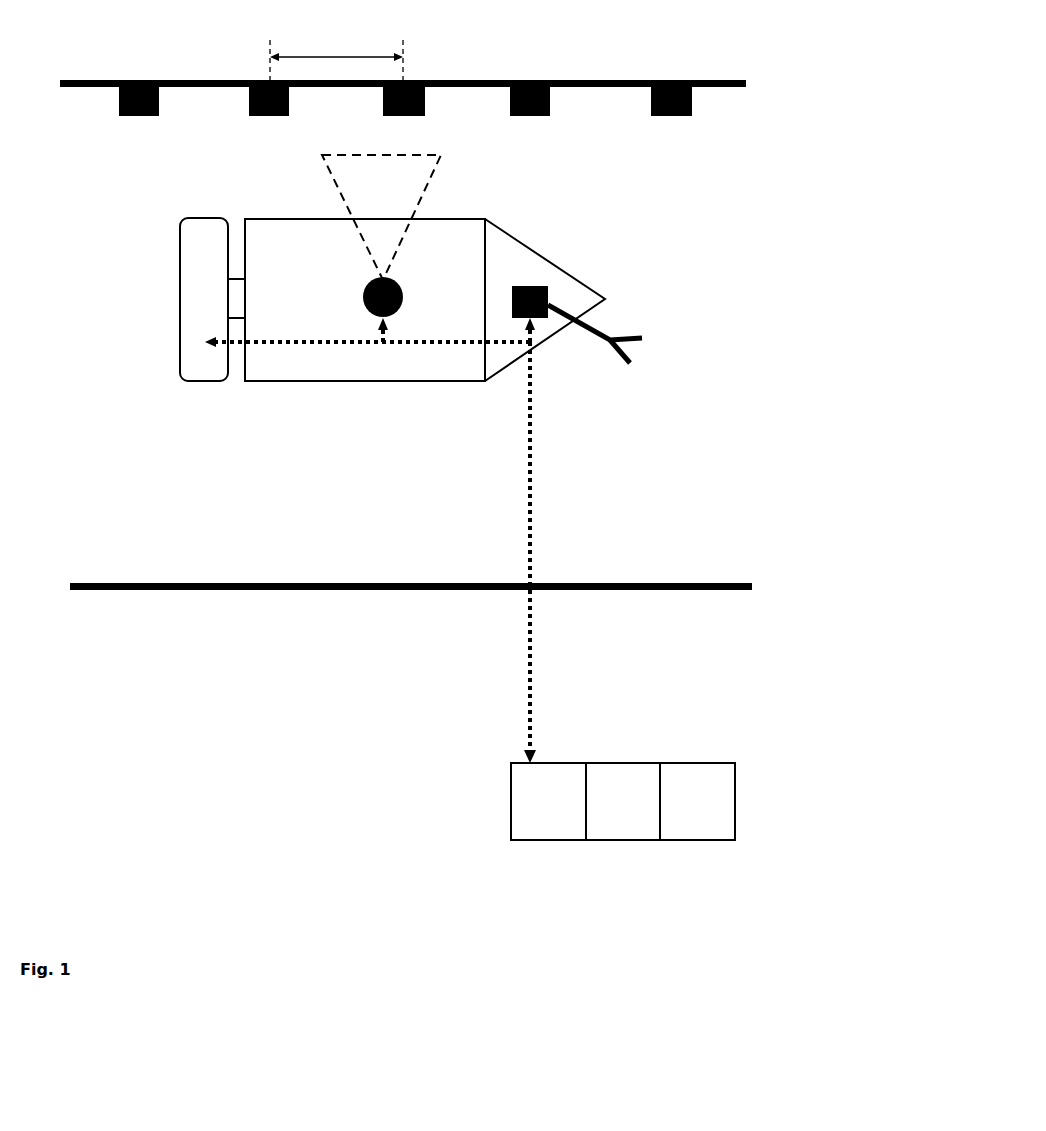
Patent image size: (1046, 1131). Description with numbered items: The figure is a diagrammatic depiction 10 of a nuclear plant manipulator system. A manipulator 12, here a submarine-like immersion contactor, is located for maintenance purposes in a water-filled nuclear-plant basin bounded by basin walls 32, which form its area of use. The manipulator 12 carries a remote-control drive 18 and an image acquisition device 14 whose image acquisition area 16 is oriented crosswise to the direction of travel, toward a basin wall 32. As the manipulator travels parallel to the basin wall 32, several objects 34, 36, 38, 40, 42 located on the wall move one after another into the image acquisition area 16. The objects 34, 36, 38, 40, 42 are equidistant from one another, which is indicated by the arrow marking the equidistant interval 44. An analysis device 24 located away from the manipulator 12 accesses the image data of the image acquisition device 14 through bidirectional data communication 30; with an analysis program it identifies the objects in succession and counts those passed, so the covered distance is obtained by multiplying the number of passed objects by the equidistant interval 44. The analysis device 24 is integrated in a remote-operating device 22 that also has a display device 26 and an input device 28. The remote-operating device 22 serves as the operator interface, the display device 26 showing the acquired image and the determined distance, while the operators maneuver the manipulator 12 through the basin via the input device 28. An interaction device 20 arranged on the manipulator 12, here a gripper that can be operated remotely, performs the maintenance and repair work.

The diagrammatic depiction 10 is at (775, 872).
The manipulator 12 is at (310, 381).
The image acquisition device 14 is at (362, 294).
The image acquisition area 16 is at (338, 191).
The remote-control drive 18 is at (200, 302).
The interaction device 20 is at (550, 290).
The remote-operating device 22 is at (699, 763).
The analysis device 24 is at (544, 808).
The display device 26 is at (622, 791).
The input device 28 is at (700, 794).
The bidirectional data communication 30 is at (534, 698).
The basin wall 32 is at (93, 89).
The object 34 is at (143, 116).
The object 36 is at (250, 117).
The object 38 is at (425, 116).
The object 40 is at (549, 116).
The object 42 is at (696, 116).
The equidistant interval 44 is at (355, 57).